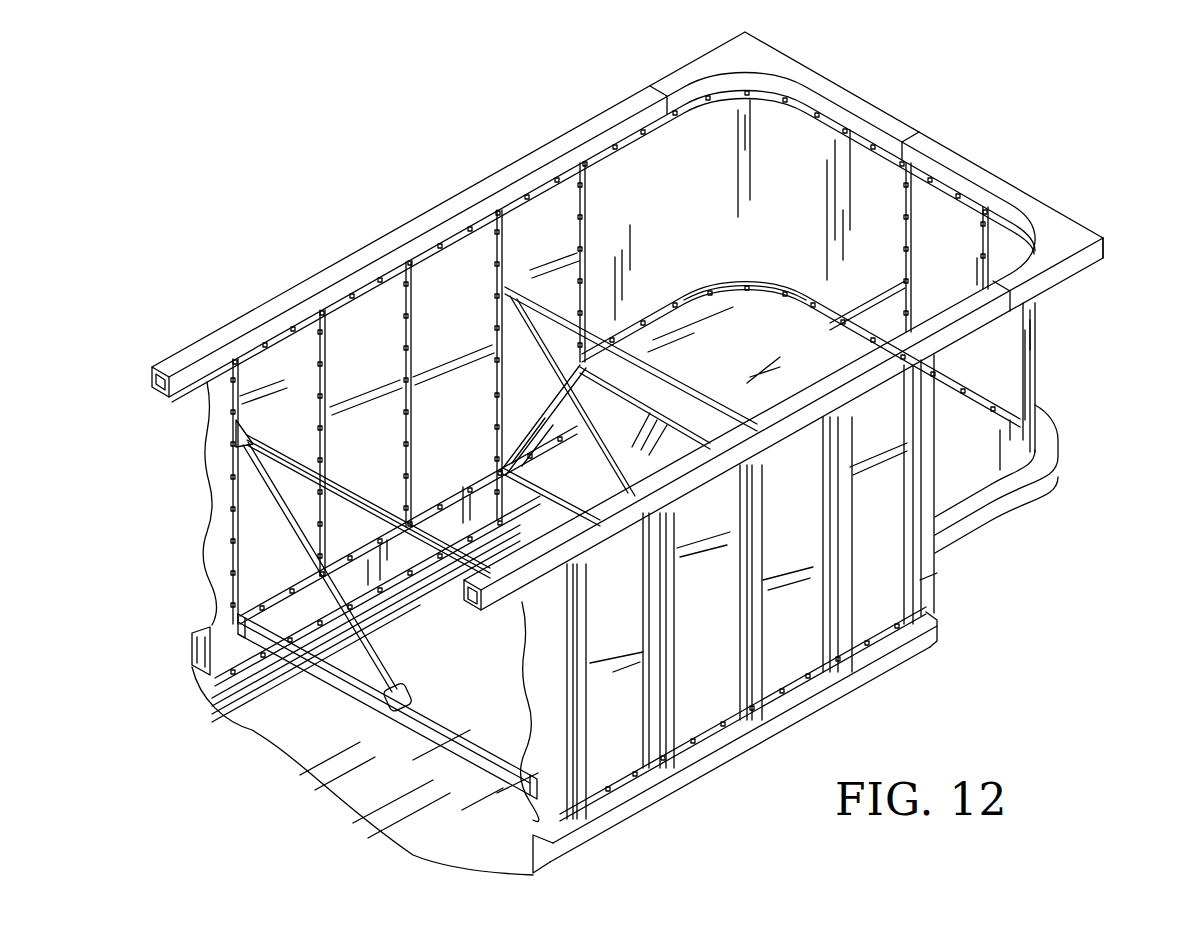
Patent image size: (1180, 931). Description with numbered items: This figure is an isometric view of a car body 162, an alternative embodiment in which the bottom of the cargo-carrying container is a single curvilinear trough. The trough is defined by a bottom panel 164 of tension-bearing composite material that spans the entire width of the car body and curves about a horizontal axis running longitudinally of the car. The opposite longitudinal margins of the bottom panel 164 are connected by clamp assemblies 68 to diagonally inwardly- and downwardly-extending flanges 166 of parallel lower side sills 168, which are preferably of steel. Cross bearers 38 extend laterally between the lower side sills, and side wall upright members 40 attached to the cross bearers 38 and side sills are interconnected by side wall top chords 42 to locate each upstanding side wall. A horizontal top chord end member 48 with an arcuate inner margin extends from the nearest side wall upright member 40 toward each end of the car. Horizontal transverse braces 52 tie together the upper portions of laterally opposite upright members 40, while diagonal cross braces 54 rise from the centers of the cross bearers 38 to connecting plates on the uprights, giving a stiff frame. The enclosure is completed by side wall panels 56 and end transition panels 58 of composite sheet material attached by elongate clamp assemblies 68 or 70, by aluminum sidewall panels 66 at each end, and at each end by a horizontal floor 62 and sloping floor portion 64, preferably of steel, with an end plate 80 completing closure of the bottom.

The cross bearer 38 is at (353, 687).
The side wall upright member 40 is at (935, 591).
The side wall top chord 42 is at (960, 330).
The horizontal top chord end member 48 is at (778, 60).
The horizontal transverse brace 52 is at (357, 490).
The diagonal cross brace 54 is at (367, 618).
The side wall panel 56 is at (218, 482).
The end transition panel 58 is at (1000, 348).
The horizontal floor end portion 62 is at (762, 322).
The sloping floor portion 64 is at (667, 437).
The sidewall panel 66 is at (553, 242).
The clamp assembly 68 is at (683, 300).
The clamp assembly 70 is at (910, 210).
The end plate 80 is at (550, 510).
The car body 162 is at (1022, 175).
The bottom panel 164 is at (350, 797).
The flange 166 is at (735, 745).
The lower side sill 168 is at (227, 650).